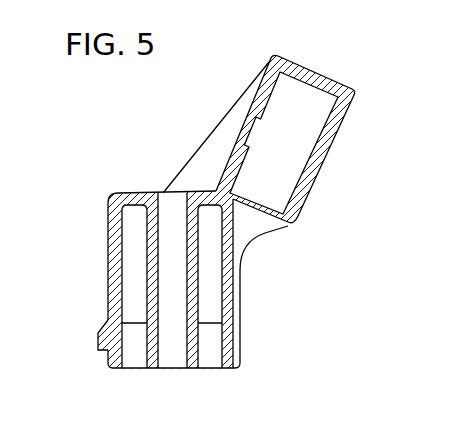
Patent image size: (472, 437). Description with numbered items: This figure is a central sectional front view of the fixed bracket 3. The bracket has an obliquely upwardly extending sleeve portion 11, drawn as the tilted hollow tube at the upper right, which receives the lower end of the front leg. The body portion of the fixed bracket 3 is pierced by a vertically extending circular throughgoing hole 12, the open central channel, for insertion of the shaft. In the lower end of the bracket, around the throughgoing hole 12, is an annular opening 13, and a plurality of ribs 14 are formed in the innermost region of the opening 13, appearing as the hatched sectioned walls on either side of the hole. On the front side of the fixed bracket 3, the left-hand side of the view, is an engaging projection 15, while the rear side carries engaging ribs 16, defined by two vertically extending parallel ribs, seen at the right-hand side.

The fixed bracket 3 is at (380, 108).
The sleeve portion 11 is at (232, 79).
The throughgoing hole 12 is at (175, 202).
The annular opening 13 is at (143, 363).
The ribs 14 is at (130, 250).
The engaging projection 15 is at (103, 338).
The engaging ribs 16 is at (235, 351).